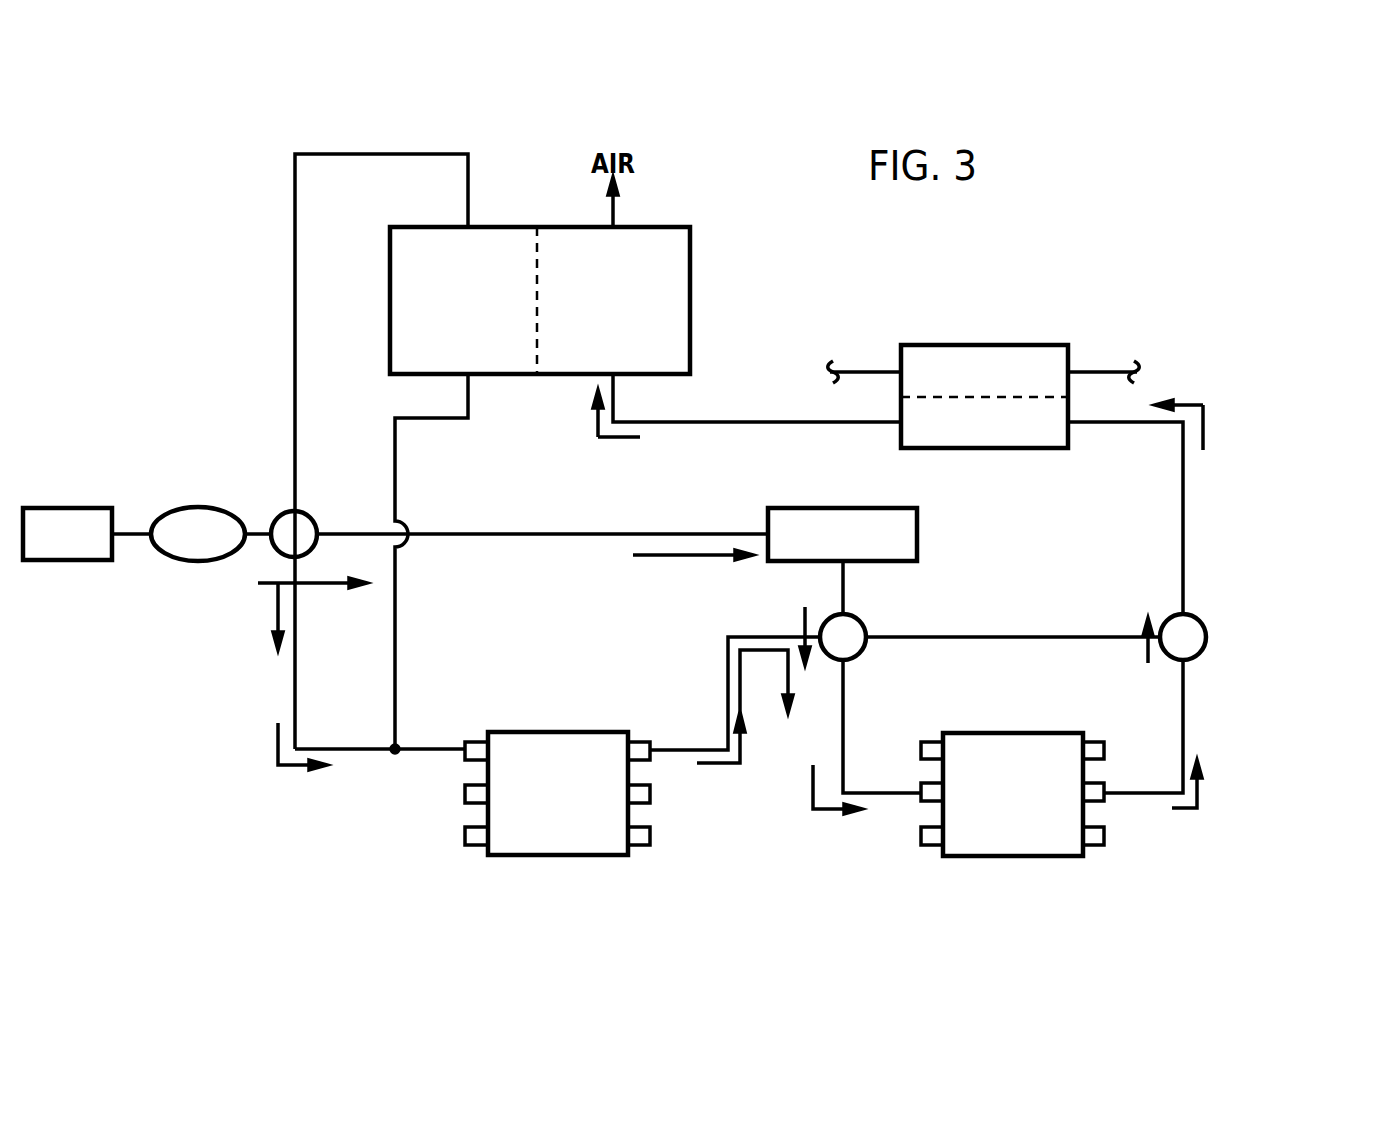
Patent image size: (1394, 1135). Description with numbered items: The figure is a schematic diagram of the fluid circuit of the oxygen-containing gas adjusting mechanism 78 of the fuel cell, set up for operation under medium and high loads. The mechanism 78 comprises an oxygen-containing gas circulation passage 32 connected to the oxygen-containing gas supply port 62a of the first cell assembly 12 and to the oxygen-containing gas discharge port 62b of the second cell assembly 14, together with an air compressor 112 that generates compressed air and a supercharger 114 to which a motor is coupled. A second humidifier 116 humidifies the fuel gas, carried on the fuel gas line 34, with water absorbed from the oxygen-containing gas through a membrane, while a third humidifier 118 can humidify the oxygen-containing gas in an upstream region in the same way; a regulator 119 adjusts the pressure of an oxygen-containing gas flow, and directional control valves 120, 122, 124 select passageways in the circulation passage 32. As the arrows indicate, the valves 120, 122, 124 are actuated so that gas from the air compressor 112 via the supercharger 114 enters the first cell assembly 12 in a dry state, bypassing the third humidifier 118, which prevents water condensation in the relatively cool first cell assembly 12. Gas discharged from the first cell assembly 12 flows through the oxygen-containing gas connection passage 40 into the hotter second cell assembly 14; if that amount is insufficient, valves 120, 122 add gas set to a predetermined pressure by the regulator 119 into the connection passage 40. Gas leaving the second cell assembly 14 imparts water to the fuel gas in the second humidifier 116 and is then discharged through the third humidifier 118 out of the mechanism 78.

The first cell assembly 12 is at (563, 732).
The second cell assembly 14 is at (1015, 733).
The oxygen-containing gas circulation passage 32 is at (421, 751).
The fuel gas supply passage 34 is at (1101, 373).
The oxygen-containing gas connection passage 40 is at (685, 750).
The oxygen-containing gas supply port 62a is at (476, 742).
The oxygen-containing gas discharge port 62b is at (636, 742).
The oxygen-containing gas adjusting mechanism 78 is at (800, 281).
The air compressor 112 is at (91, 508).
The supercharger 114 is at (204, 508).
The second humidifier 116 is at (1051, 448).
The third humidifier 118 is at (692, 282).
The regulator 119 is at (896, 508).
The directional control valve 120 is at (314, 522).
The directional control valve 122 is at (862, 623).
The directional control valve 124 is at (1204, 623).